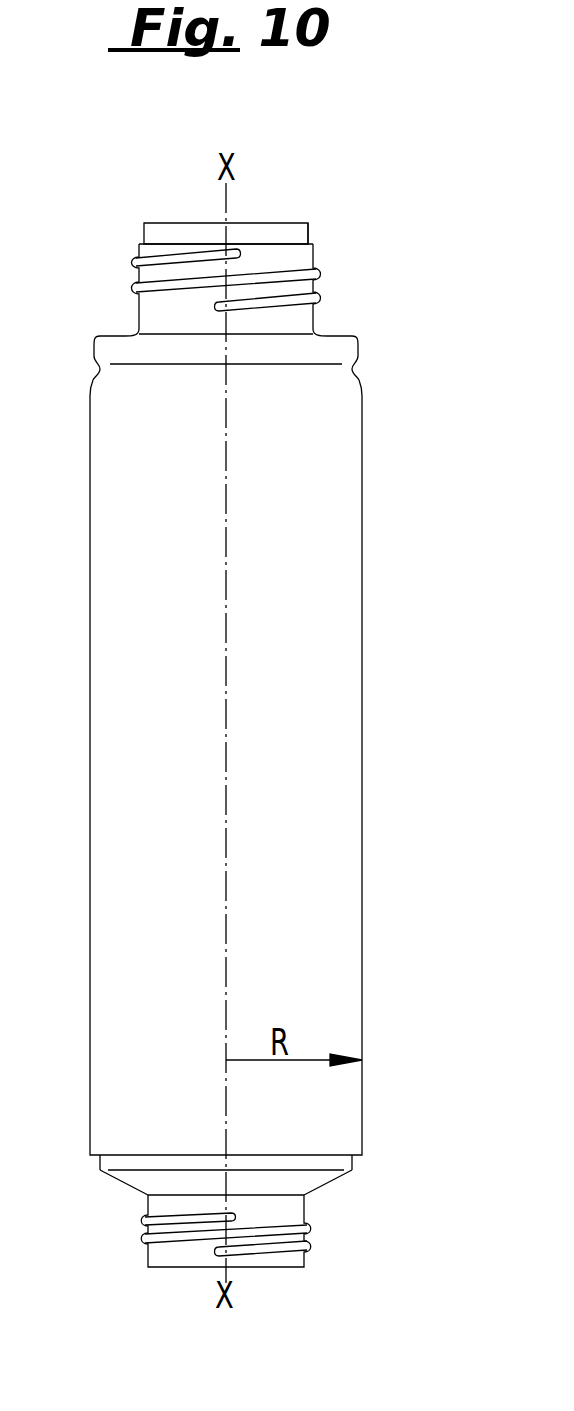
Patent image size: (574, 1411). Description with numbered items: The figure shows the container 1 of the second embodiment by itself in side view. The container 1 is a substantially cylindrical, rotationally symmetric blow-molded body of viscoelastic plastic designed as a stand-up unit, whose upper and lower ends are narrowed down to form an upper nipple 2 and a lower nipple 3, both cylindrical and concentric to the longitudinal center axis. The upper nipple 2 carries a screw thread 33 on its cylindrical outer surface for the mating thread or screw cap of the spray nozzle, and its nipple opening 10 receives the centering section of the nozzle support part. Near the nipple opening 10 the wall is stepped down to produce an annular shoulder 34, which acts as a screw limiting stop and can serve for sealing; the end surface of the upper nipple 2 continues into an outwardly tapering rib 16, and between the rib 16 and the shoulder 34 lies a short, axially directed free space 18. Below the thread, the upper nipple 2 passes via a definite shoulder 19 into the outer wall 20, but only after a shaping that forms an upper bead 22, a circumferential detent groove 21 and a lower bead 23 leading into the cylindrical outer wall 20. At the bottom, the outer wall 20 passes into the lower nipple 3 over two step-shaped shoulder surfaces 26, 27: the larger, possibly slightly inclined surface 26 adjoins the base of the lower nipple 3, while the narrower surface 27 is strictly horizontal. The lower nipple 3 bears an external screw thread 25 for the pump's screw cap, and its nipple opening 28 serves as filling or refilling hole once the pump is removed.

The container 1 is at (68, 750).
The upper nipple 2 is at (138, 303).
The lower nipple 3 is at (146, 1200).
The nipple opening 10 is at (192, 240).
The rib 16 is at (143, 224).
The free space 18 is at (142, 234).
The shoulder 19 is at (118, 336).
The outer wall 20 is at (363, 525).
The detent groove 21 is at (350, 369).
The upper bead 22 is at (353, 343).
The lower bead 23 is at (364, 388).
The external screw thread 25 is at (186, 1243).
The shoulder surface 26 is at (334, 1181).
The shoulder surface 27 is at (350, 1161).
The nipple opening 28 is at (207, 1257).
The screw thread 33 is at (318, 271).
The annular shoulder 34 is at (312, 243).